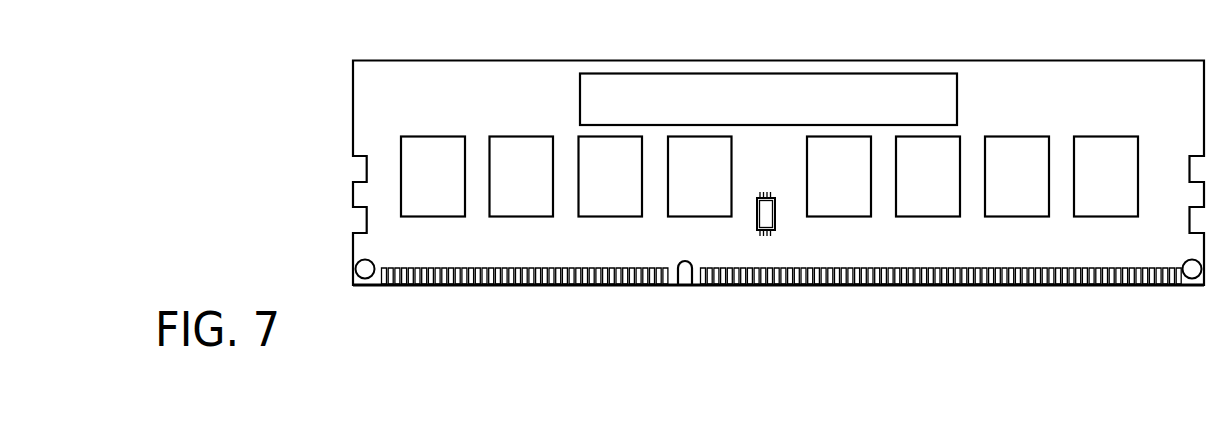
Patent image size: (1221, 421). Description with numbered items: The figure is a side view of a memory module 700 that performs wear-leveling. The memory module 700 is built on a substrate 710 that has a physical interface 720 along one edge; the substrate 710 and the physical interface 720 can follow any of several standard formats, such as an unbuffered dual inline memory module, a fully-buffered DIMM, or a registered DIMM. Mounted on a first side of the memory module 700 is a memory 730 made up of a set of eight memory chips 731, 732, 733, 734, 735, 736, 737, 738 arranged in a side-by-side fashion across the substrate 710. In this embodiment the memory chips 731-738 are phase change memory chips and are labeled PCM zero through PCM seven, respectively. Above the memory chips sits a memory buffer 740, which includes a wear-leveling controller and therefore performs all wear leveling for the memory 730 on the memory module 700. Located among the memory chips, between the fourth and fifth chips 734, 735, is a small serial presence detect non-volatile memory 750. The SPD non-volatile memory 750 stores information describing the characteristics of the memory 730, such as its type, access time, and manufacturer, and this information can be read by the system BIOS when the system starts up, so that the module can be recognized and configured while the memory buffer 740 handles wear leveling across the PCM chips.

The memory module 700 is at (235, 274).
The substrate 710 is at (353, 127).
The physical interface 720 is at (381, 287).
The memory 730 is at (388, 139).
The memory chip 731 is at (433, 217).
The memory chip 732 is at (522, 217).
The memory chip 733 is at (611, 217).
The memory chip 734 is at (700, 217).
The memory chip 735 is at (839, 217).
The memory chip 736 is at (928, 217).
The memory chip 737 is at (1017, 217).
The memory chip 738 is at (1106, 217).
The memory buffer 740 is at (957, 90).
The serial presence detect non-volatile memory 750 is at (775, 220).